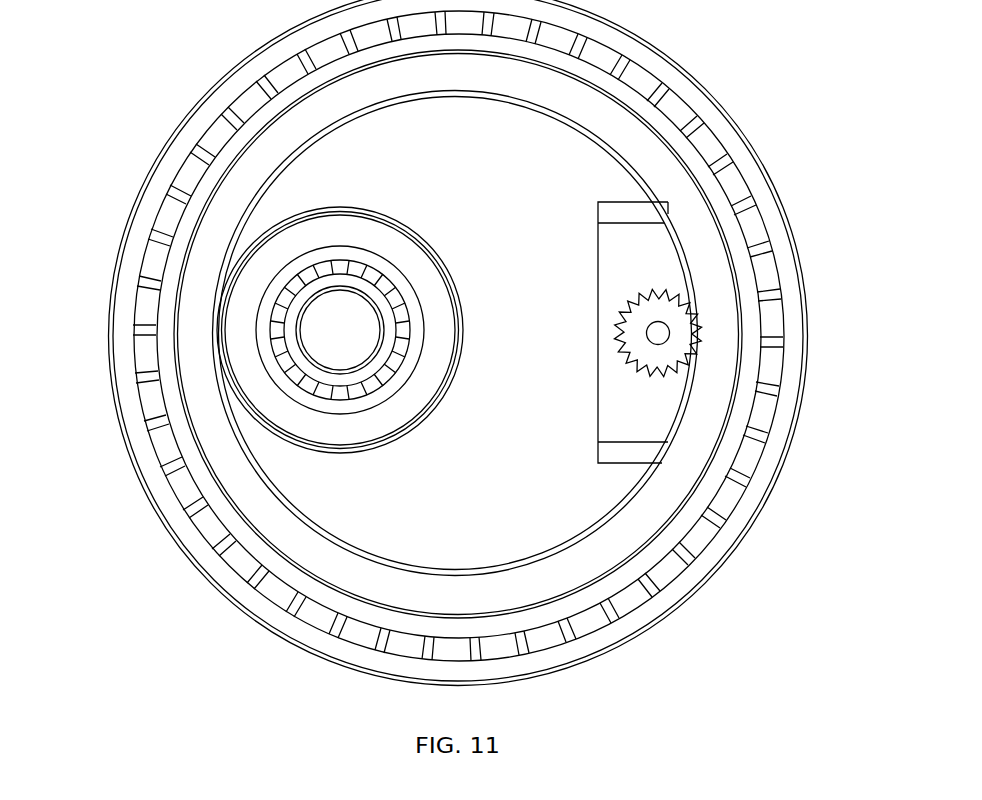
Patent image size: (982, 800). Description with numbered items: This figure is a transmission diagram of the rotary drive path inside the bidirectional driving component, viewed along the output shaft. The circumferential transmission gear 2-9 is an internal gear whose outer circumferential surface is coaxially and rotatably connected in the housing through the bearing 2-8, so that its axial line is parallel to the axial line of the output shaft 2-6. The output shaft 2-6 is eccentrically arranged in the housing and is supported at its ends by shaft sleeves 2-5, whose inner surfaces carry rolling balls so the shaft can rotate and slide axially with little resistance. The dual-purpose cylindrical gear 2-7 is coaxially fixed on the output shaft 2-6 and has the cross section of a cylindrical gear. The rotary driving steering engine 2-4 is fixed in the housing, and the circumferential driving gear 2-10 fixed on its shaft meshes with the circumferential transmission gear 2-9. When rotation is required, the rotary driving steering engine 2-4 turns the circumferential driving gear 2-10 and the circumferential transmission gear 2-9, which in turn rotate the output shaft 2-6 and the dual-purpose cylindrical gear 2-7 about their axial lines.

The rotary driving steering engine 2-4 is at (655, 423).
The shaft sleeve 2-5 is at (282, 270).
The output shaft 2-6 is at (327, 345).
The dual-purpose cylindrical gear 2-7 is at (287, 405).
The bearing 2-8 is at (722, 195).
The circumferential transmission gear 2-9 is at (718, 267).
The circumferential driving gear 2-10 is at (690, 335).